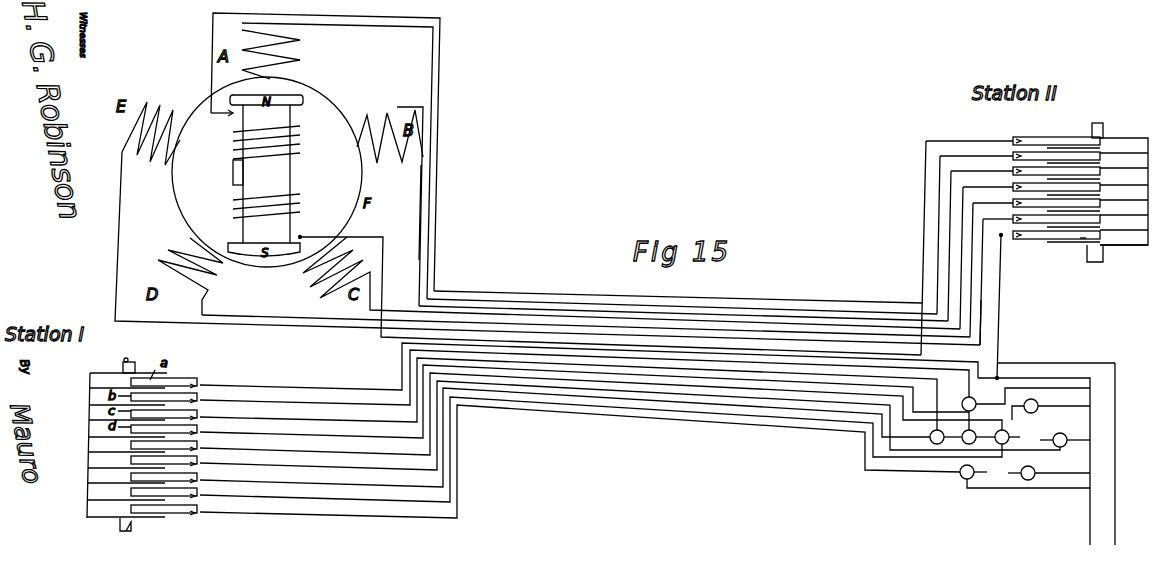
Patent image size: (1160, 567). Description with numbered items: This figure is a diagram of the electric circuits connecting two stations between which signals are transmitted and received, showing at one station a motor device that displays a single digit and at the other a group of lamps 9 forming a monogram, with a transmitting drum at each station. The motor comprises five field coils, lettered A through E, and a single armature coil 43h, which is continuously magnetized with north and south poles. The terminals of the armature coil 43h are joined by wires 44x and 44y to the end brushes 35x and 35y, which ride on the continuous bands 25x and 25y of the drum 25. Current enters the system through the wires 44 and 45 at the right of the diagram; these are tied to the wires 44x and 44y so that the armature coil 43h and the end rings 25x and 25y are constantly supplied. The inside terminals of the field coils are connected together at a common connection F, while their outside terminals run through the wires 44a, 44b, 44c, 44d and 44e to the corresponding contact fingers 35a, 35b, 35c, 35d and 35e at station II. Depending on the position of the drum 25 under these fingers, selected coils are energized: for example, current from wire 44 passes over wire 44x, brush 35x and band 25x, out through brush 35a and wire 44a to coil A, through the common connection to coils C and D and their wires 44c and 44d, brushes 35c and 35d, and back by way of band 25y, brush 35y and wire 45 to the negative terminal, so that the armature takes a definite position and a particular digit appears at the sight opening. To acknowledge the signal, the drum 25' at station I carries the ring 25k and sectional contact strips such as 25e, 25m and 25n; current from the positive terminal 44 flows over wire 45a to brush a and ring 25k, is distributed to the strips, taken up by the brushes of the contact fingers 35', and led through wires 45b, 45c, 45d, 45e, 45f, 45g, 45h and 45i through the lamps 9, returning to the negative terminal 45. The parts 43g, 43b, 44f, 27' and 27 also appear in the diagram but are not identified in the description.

The spring 43g is at (300, 58).
The pole piece 43b is at (305, 99).
The armature coil 43h is at (300, 146).
The conductor 44f is at (418, 198).
The wire 44x is at (442, 52).
The wire 44a is at (570, 306).
The wire 44b is at (625, 314).
The wire 44c is at (685, 323).
The wire 44d is at (742, 332).
The wire 44e is at (797, 341).
The supply wire 44 is at (914, 304).
The wire 44y is at (976, 341).
The supply wire 45 is at (997, 312).
The wire 45a is at (276, 388).
The wire 45b is at (312, 403).
The wire 45c is at (268, 418).
The wire 45d is at (316, 425).
The wire 45e is at (601, 414).
The wire 45f is at (756, 397).
The wire 45g is at (712, 402).
The wire 45h is at (655, 405).
The wire 45i is at (600, 410).
The ring 25k is at (90, 383).
The sectional contact strip 25e is at (89, 400).
The sectional contact strip 25m is at (88, 412).
The sectional contact strip 25n is at (88, 432).
The contact drum 25' is at (101, 492).
The terminal 27' is at (110, 441).
The contact fingers 35' is at (177, 432).
The lamp 9 is at (1010, 438).
The drum 25 is at (1120, 179).
The continuous band 25x is at (1118, 150).
The continuous band 25y is at (1124, 245).
The terminal 27 is at (1100, 266).
The end brush 35x is at (1037, 139).
The contact finger 35a is at (1072, 158).
The contact finger 35b is at (1035, 172).
The contact brush 35c is at (1040, 190).
The contact brush 35d is at (1065, 212).
The contact finger 35e is at (1070, 222).
The end brush 35y is at (1083, 240).